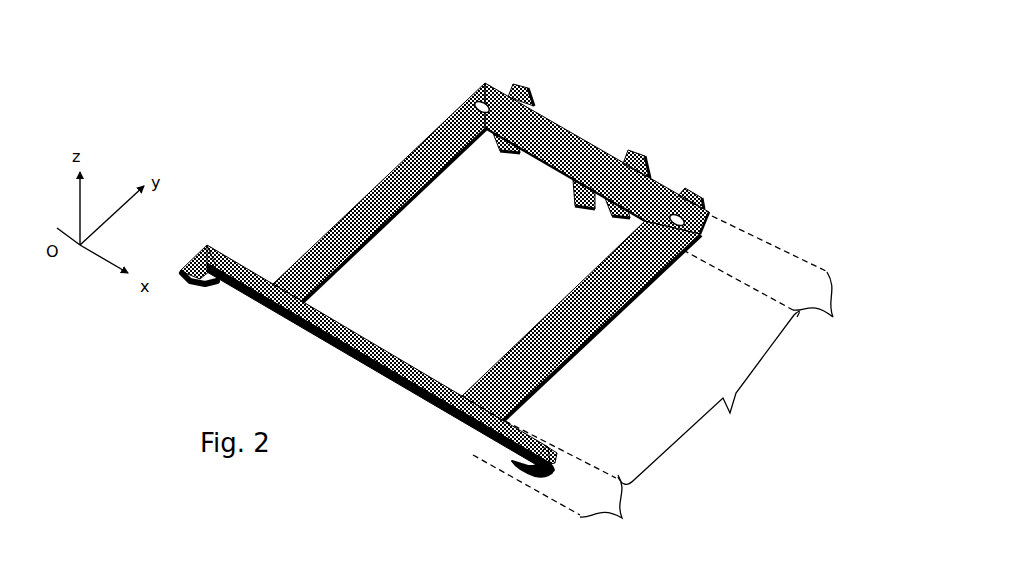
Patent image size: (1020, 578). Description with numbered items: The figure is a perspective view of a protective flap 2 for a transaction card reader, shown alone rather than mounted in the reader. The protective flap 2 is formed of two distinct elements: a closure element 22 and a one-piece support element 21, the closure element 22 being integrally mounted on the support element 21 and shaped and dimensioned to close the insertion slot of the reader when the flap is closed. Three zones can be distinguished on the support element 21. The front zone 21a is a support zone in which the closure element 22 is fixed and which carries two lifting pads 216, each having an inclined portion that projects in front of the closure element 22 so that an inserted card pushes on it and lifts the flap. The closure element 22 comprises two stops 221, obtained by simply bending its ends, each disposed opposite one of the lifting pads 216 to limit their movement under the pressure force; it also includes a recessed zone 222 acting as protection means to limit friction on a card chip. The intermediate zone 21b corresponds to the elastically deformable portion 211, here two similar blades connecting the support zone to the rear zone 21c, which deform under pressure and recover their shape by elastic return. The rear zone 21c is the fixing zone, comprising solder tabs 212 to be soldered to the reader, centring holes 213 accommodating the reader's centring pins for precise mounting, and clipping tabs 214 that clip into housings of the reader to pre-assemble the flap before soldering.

The protective flap 2 is at (280, 133).
The one-piece support element 21 is at (408, 158).
The elastically deformable portion 211 is at (398, 212).
The solder tab 212 is at (518, 86).
The centring hole 213 is at (473, 101).
The clipping tab 214 is at (687, 192).
The lifting pad 216 is at (203, 286).
The closure element 22 is at (271, 305).
The stop 221 is at (195, 260).
The recessed zone 222 is at (394, 382).
The front zone 21a is at (568, 482).
The intermediate zone 21b is at (708, 397).
The rear zone 21c is at (779, 277).